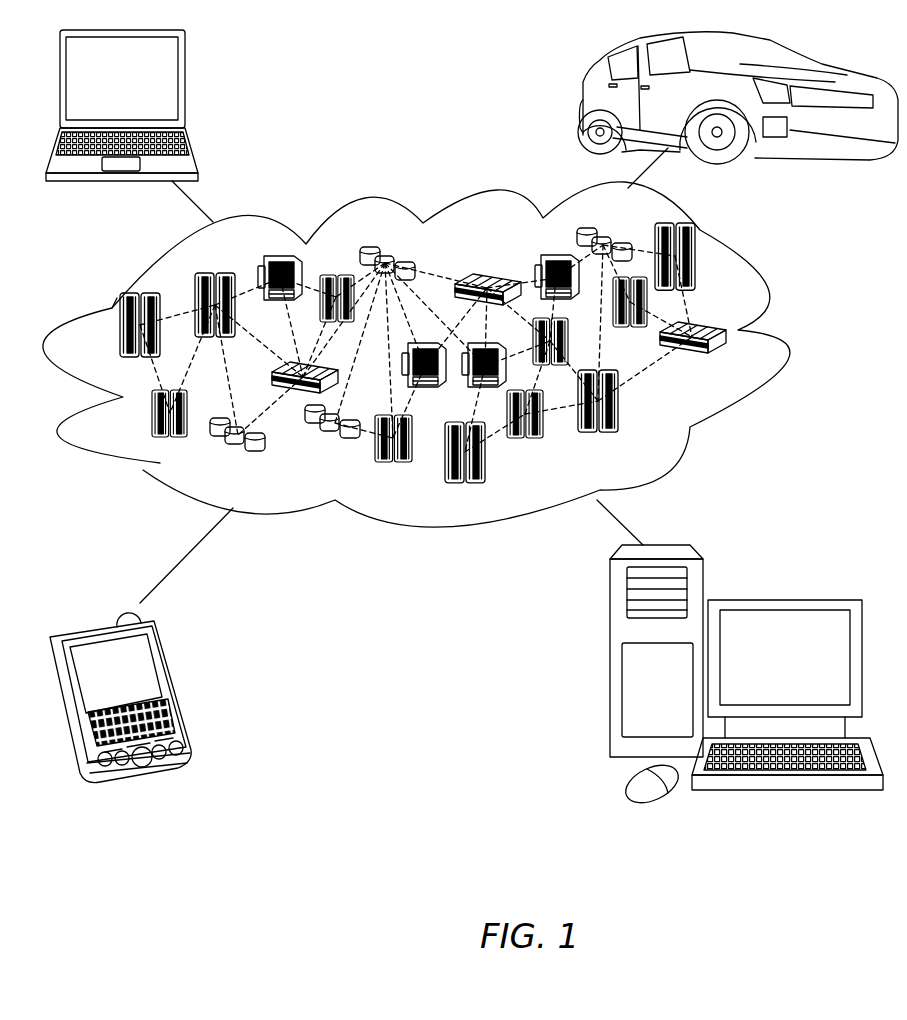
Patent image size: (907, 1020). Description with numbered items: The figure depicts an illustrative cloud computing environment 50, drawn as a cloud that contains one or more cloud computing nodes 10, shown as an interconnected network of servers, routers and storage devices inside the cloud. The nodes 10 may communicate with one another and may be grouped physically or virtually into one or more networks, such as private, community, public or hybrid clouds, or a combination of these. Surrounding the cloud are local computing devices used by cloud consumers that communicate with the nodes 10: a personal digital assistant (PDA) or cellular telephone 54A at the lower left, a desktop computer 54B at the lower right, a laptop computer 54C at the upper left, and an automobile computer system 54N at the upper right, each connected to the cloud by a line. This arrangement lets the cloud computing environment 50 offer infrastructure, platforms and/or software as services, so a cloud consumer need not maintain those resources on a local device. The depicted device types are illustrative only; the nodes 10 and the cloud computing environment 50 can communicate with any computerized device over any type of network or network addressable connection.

The cloud computing nodes 10 is at (746, 367).
The cloud computing environment 50 is at (782, 337).
The personal digital assistant (PDA) or cellular telephone 54A is at (173, 685).
The desktop computer 54B is at (782, 600).
The laptop computer 54C is at (187, 85).
The automobile computer system 54N is at (583, 100).